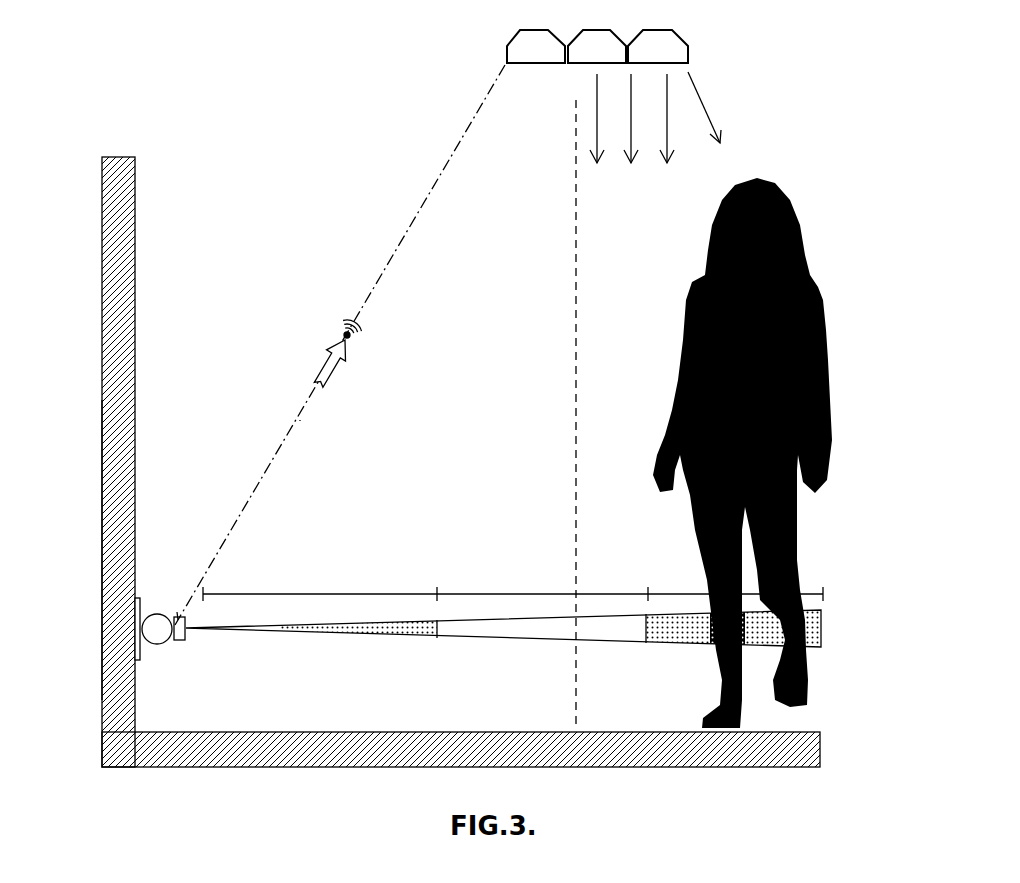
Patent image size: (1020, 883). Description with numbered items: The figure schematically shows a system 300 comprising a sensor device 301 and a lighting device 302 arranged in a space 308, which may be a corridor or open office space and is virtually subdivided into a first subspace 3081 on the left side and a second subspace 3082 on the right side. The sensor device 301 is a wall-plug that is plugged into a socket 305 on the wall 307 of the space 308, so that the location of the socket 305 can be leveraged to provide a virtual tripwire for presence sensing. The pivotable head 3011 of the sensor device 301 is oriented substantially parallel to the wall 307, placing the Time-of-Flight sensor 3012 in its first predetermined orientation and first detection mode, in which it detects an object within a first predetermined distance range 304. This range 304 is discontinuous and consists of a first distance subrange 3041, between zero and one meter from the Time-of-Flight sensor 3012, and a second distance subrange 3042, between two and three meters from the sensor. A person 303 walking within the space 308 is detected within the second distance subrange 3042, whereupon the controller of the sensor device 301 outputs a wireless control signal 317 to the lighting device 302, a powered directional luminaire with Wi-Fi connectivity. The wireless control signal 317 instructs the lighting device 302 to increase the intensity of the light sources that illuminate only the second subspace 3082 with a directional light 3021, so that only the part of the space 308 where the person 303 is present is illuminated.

The system 300 is at (190, 90).
The sensor device 301 is at (165, 646).
The pivotable head 3011 is at (178, 612).
The Time-of-Flight sensor 3012 is at (200, 652).
The lighting device 302 is at (507, 55).
The directional light 3021 is at (722, 108).
The person 303 is at (690, 280).
The first predetermined distance range 304 is at (823, 634).
The first distance subrange 3041 is at (332, 594).
The second distance subrange 3042 is at (676, 594).
The socket 305 is at (135, 641).
The wall 307 is at (102, 546).
The space 308 is at (160, 150).
The first subspace 3081 is at (442, 366).
The second subspace 3082 is at (625, 398).
The wireless control signal 317 is at (325, 355).